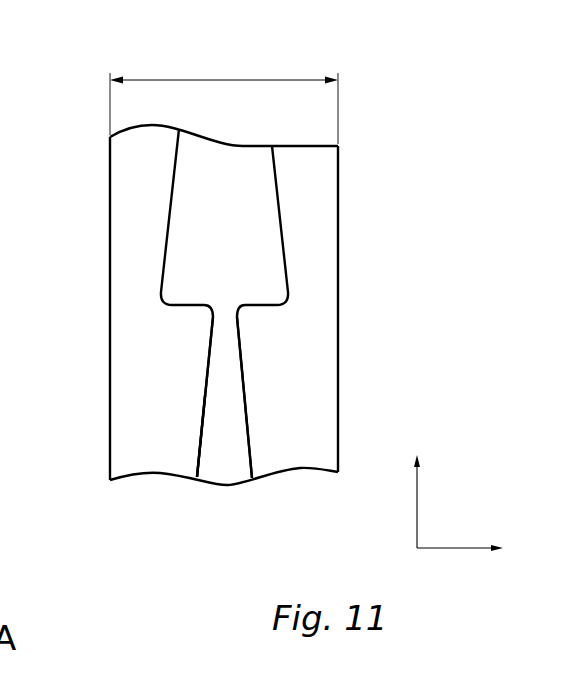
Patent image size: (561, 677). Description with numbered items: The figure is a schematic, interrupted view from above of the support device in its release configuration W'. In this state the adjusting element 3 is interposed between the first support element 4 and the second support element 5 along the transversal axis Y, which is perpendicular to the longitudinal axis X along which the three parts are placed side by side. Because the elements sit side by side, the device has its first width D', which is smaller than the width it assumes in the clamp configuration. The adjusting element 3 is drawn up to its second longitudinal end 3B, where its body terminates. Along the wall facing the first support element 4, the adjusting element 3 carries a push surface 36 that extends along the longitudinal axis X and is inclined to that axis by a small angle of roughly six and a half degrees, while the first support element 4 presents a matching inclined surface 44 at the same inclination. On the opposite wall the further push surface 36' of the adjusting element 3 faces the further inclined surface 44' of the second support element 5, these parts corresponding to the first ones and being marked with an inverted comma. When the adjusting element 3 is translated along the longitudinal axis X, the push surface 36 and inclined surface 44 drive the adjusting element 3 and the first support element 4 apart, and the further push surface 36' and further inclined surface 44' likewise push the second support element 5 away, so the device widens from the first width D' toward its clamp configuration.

The adjusting element 3 is at (223, 437).
The second longitudinal end 3B is at (288, 487).
The first support element 4 is at (137, 393).
The second support element 5 is at (310, 387).
The push surface 36 is at (141, 397).
The further push surface 36' is at (290, 223).
The inclined surface 44 is at (116, 437).
The further inclined surface 44' is at (322, 397).
The first width D' is at (224, 90).
The release configuration W' is at (496, 191).
The longitudinal axis X is at (417, 490).
The transversal axis Y is at (462, 548).